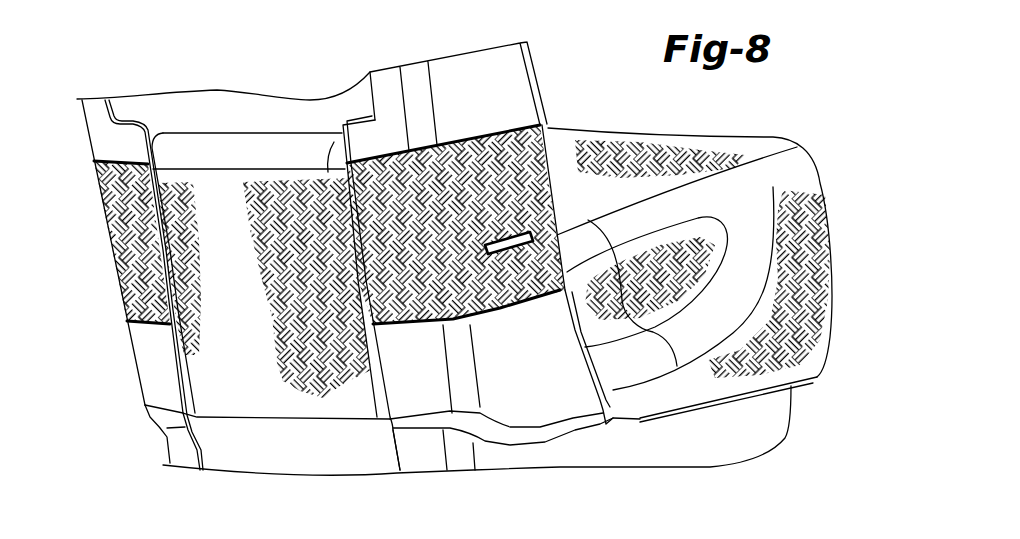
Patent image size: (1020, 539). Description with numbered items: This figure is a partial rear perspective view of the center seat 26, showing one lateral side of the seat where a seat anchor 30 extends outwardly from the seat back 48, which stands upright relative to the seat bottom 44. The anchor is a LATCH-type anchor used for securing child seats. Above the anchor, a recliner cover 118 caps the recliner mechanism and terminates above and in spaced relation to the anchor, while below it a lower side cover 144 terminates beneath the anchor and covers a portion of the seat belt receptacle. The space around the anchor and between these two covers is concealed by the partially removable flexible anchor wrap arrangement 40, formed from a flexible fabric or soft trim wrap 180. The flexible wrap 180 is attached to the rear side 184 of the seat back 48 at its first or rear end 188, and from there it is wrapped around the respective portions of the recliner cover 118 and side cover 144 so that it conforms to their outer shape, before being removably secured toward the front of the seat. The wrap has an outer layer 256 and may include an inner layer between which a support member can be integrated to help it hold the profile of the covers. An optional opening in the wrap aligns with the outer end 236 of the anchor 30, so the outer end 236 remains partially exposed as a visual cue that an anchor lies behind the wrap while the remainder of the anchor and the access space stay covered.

The center seat 26 is at (80, 128).
The seat back 48 is at (100, 273).
The recliner cover 118 is at (481, 80).
The first or rear end 188 is at (363, 172).
The flexible anchor wrap arrangement 40 is at (555, 136).
The seat bottom 44 is at (778, 128).
The outer layer 256 is at (520, 201).
The rear side 184 is at (246, 346).
The flexible wrap 180 is at (442, 321).
The seat anchor 30 is at (497, 258).
The outer end 236 is at (535, 300).
The lower side cover 144 is at (565, 422).